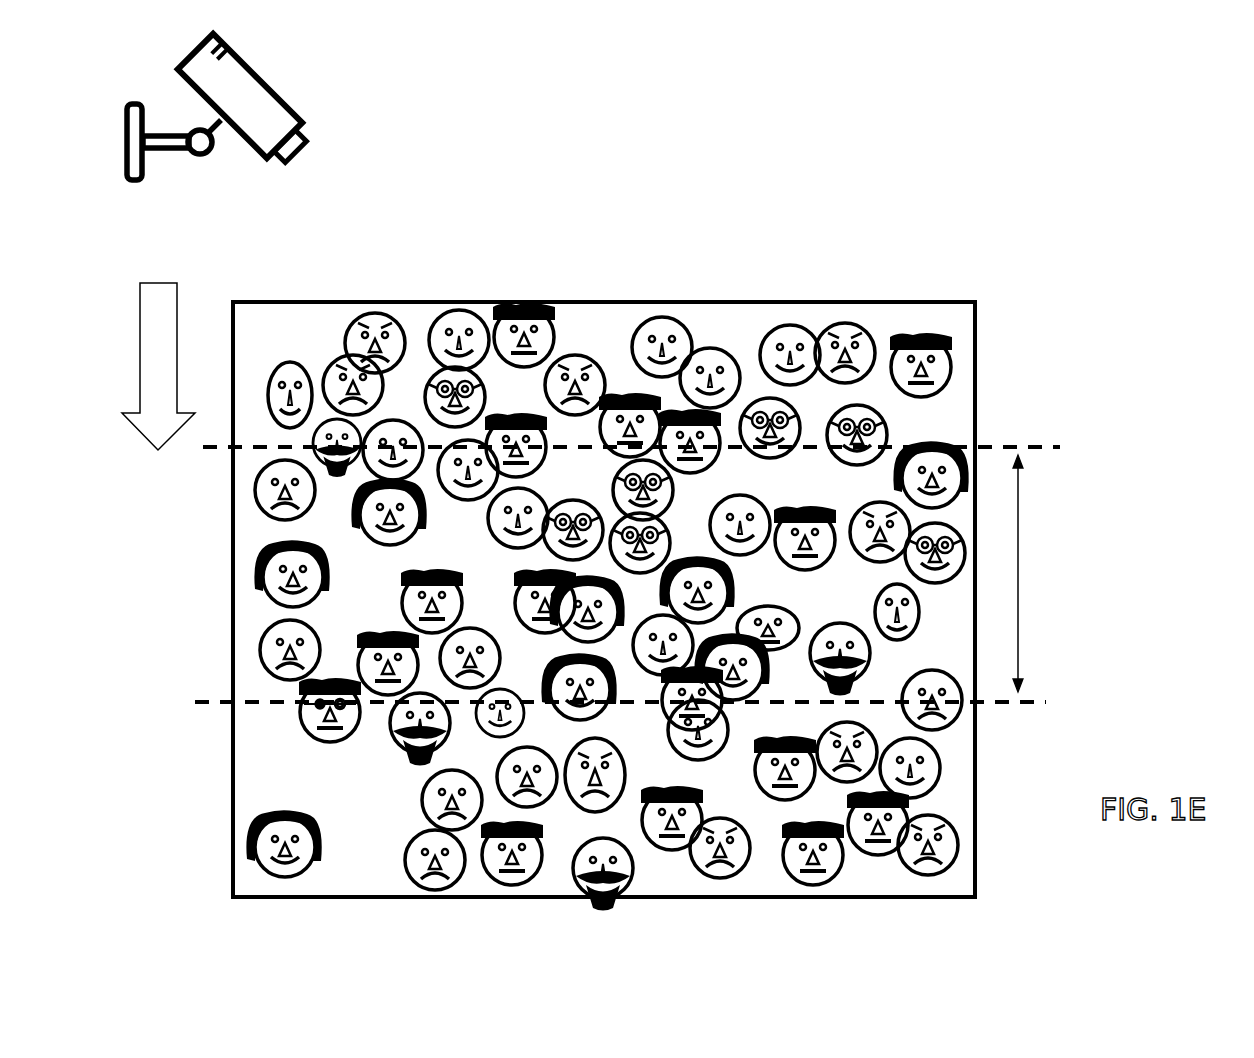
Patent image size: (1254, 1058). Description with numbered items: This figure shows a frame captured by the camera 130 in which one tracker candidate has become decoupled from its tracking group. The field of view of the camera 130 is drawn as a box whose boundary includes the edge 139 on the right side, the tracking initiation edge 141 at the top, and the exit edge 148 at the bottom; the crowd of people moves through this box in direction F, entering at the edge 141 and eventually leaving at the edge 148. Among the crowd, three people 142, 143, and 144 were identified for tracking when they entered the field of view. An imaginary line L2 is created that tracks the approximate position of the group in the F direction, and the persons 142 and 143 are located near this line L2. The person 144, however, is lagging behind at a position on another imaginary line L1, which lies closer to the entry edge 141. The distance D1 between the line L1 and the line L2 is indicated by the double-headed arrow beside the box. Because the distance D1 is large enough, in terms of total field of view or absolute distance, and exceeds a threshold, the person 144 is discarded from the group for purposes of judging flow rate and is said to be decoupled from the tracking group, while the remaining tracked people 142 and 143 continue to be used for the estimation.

The camera 130 is at (232, 62).
The edge of field of view 139 is at (977, 356).
The tracking initiation edge 141 is at (380, 301).
The person 142 is at (326, 738).
The person 143 is at (572, 668).
The person 144 is at (888, 424).
The exit edge 148 is at (740, 898).
The imaginary line L1 is at (997, 442).
The imaginary line L2 is at (1005, 708).
The distance D1 is at (1020, 545).
The direction F is at (160, 292).